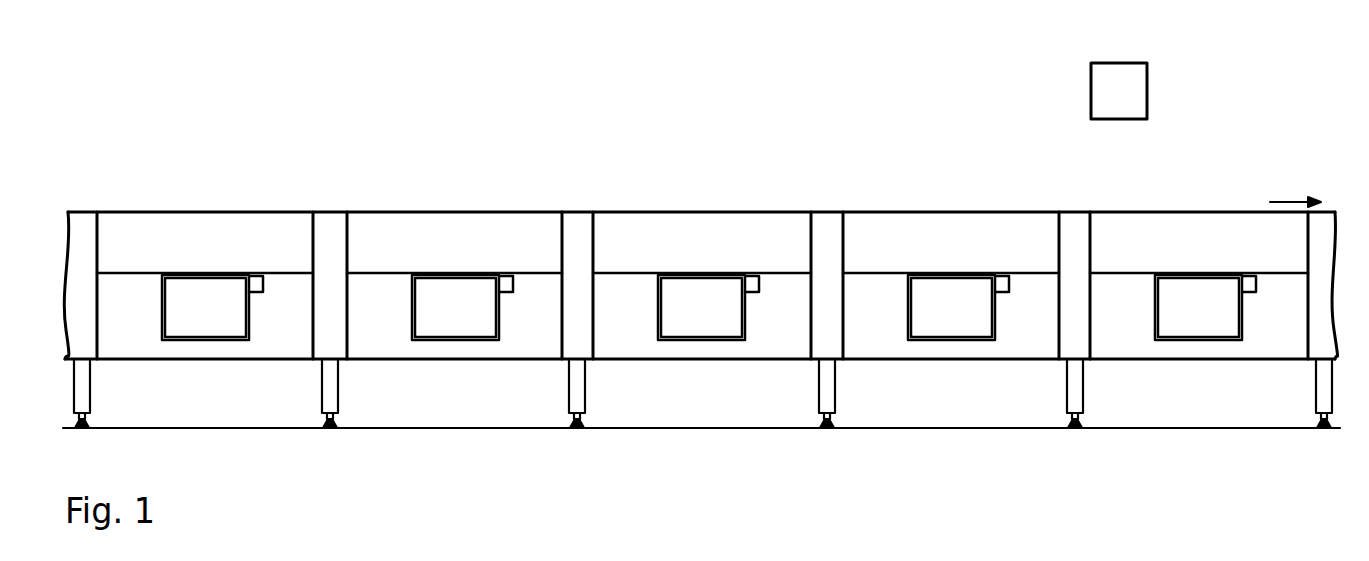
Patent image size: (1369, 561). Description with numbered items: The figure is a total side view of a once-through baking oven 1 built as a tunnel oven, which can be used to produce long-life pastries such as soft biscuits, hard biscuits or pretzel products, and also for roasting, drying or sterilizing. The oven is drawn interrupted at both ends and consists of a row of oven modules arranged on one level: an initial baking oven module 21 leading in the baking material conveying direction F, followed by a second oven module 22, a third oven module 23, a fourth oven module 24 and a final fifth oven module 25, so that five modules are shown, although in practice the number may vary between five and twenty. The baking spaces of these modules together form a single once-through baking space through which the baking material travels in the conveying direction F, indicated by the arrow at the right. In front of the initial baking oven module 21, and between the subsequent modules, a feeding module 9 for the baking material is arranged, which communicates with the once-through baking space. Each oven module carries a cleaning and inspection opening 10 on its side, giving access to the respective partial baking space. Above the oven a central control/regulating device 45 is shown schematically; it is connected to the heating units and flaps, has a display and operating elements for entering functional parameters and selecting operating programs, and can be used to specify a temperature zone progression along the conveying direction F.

The once-through baking oven 1 is at (619, 108).
The initial baking oven module 21 is at (163, 198).
The second oven module 22 is at (416, 198).
The third oven module 23 is at (666, 198).
The fourth oven module 24 is at (893, 198).
The fifth oven module 25 is at (1170, 198).
The feeding module 9 is at (81, 225).
The cleaning and inspection openings 10 is at (221, 288).
The central control/regulating device 45 is at (1102, 108).
The baking material conveying direction F is at (1291, 202).